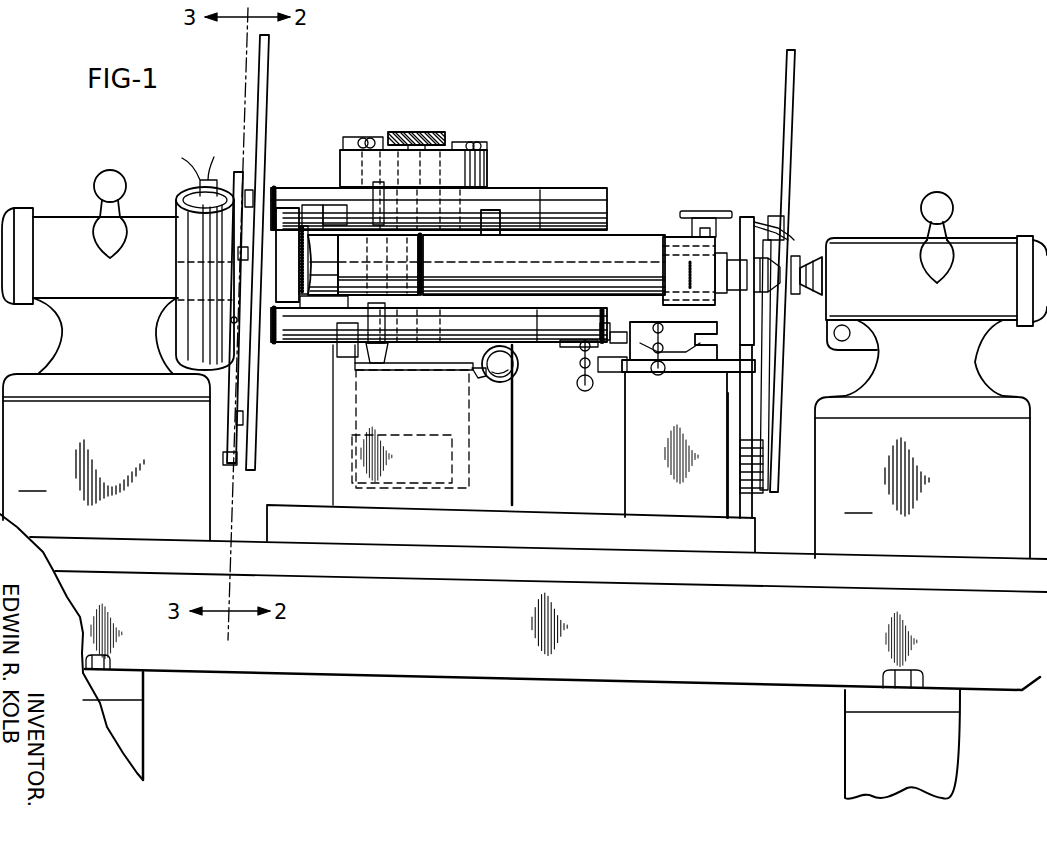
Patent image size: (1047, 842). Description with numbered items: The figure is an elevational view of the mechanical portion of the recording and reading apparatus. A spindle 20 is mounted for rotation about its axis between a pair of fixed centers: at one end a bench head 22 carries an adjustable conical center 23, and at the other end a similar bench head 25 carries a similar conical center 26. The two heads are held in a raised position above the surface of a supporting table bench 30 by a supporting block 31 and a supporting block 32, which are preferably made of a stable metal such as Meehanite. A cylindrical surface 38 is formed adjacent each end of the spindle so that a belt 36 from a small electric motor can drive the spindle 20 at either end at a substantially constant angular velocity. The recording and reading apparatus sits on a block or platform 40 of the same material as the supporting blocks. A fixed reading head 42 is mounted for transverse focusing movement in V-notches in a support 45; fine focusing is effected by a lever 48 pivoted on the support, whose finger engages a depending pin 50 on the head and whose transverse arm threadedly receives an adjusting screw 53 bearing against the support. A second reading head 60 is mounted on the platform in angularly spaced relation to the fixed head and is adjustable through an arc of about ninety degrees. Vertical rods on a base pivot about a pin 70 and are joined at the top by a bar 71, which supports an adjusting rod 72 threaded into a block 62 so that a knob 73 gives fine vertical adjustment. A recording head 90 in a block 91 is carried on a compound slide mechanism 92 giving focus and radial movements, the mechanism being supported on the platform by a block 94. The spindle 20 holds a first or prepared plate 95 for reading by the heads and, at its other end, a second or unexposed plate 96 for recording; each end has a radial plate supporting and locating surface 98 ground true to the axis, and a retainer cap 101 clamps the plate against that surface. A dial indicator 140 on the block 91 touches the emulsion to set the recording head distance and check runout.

The spindle 20 is at (318, 238).
The bench head 22 is at (997, 252).
The adjustable conical center 23 is at (805, 284).
The bench head 25 is at (56, 222).
The conical center 26 is at (176, 264).
The table bench 30 is at (430, 677).
The supporting block 31 is at (922, 439).
The supporting block 32 is at (106, 419).
The belt 36 is at (752, 422).
The cylindrical surface 38 is at (290, 222).
The block or platform 40 is at (563, 545).
The fixed reading head 42 is at (312, 330).
The support 45 is at (503, 452).
The lever 48 is at (478, 372).
The depending pin 50 is at (392, 366).
The adjusting screw 53 is at (517, 373).
The second reading head 60 is at (568, 200).
The block 62 is at (493, 210).
The pin 70 is at (350, 457).
The bar 71 is at (488, 172).
The adjusting rod 72 is at (414, 353).
The knob 73 is at (412, 132).
The recording head 90 is at (612, 257).
The block 91 is at (680, 250).
The compound slide mechanism 92 is at (678, 370).
The block 94 is at (642, 486).
The first or prepared plate 95 is at (270, 60).
The second or unexposed plate 96 is at (793, 84).
The plate supporting and locating surface 98 is at (795, 236).
The retainer cap 101 is at (800, 229).
The dial indicator 140 is at (700, 212).